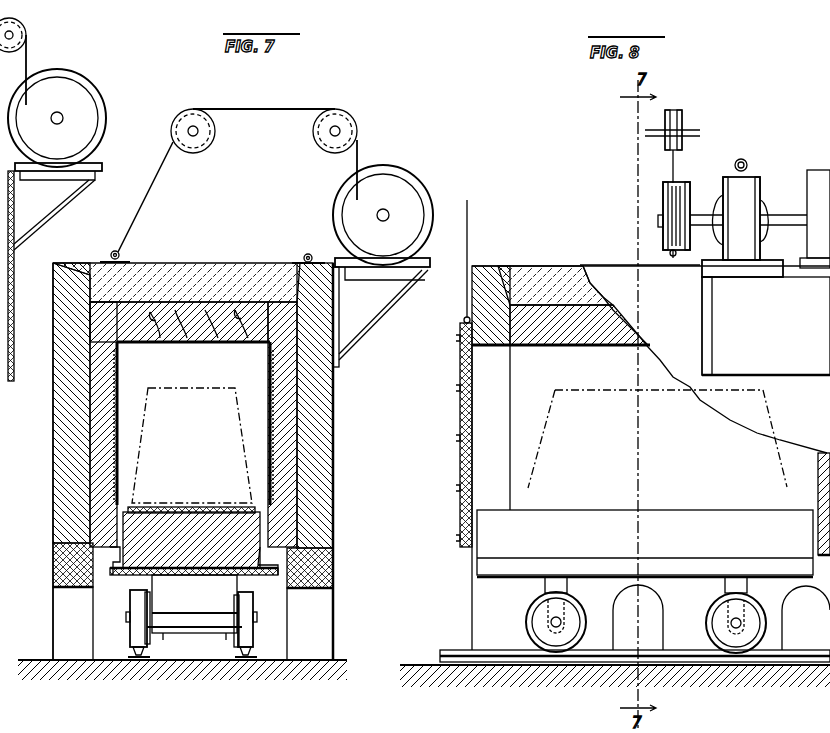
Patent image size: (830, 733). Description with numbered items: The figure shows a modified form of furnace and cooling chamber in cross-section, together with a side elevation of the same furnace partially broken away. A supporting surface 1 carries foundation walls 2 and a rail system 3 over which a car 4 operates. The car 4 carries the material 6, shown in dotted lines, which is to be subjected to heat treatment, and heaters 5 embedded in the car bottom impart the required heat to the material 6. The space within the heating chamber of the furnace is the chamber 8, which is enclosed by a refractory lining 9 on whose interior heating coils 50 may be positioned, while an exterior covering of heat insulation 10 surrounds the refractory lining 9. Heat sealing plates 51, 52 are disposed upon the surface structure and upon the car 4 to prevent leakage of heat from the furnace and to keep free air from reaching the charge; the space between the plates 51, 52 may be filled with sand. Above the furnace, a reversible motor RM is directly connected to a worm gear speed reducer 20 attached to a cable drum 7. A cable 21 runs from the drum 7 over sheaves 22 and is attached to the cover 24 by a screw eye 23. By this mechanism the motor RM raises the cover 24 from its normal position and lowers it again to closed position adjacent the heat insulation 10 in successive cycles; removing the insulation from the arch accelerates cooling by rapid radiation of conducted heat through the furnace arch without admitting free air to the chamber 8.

In FIG. 7, the supporting surface 1 is at (252, 665).
In FIG. 8, the supporting surface 1 is at (577, 678).
In FIG. 7, the foundation walls 2 is at (193, 623).
In FIG. 8, the foundation walls 2 is at (485, 606).
In FIG. 7, the rail system 3 is at (143, 660).
In FIG. 8, the rail system 3 is at (485, 652).
In FIG. 7, the car 4 is at (192, 577).
In FIG. 8, the car 4 is at (670, 570).
In FIG. 7, the heaters 5 is at (195, 510).
In FIG. 7, the material 6 is at (183, 398).
In FIG. 8, the material 6 is at (548, 433).
In FIG. 7, the cable drum 7 is at (70, 108).
In FIG. 8, the cable drum 7 is at (663, 203).
In FIG. 7, the heating chamber space 8 is at (193, 425).
In FIG. 8, the heating chamber space 8 is at (572, 428).
In FIG. 7, the refractory lining 9 is at (180, 340).
In FIG. 8, the refractory lining 9 is at (573, 340).
In FIG. 7, the heat insulation covering 10 is at (56, 285).
In FIG. 8, the heat insulation covering 10 is at (494, 335).
In FIG. 8, the worm gear speed reducer 20 is at (742, 188).
In FIG. 7, the cable 21 is at (260, 109).
In FIG. 8, the cable 21 is at (676, 166).
In FIG. 7, the sheaves 22 is at (23, 28).
In FIG. 8, the sheaves 22 is at (682, 120).
In FIG. 7, the screw eye 23 is at (124, 255).
In FIG. 7, the cover 24 is at (205, 278).
In FIG. 8, the cover 24 is at (535, 275).
In FIG. 7, the heating coils 50 is at (117, 418).
In FIG. 7, the heat sealing plate 51 is at (108, 570).
In FIG. 7, the heat sealing plate 52 is at (335, 545).
In FIG. 7, the reversible motor RM is at (392, 170).